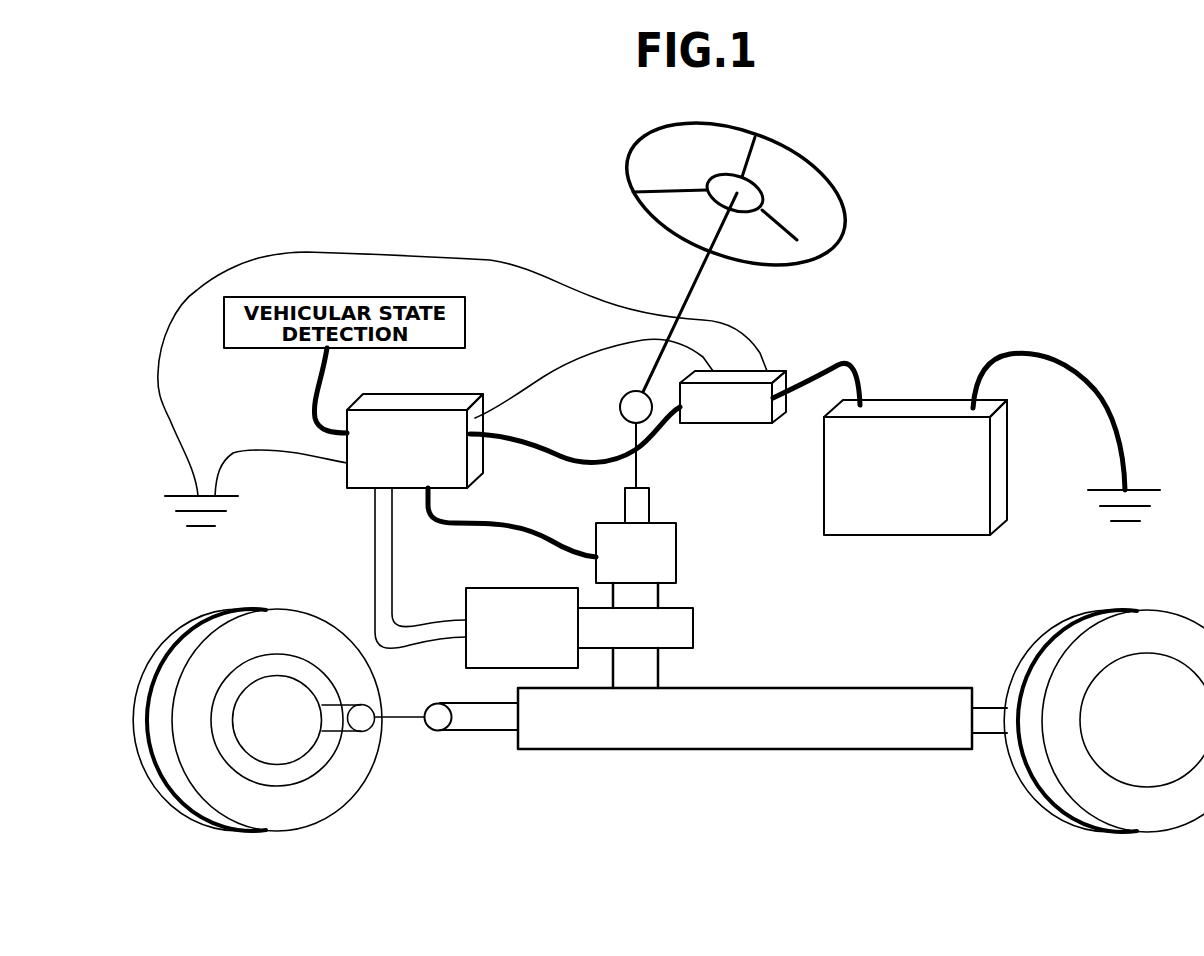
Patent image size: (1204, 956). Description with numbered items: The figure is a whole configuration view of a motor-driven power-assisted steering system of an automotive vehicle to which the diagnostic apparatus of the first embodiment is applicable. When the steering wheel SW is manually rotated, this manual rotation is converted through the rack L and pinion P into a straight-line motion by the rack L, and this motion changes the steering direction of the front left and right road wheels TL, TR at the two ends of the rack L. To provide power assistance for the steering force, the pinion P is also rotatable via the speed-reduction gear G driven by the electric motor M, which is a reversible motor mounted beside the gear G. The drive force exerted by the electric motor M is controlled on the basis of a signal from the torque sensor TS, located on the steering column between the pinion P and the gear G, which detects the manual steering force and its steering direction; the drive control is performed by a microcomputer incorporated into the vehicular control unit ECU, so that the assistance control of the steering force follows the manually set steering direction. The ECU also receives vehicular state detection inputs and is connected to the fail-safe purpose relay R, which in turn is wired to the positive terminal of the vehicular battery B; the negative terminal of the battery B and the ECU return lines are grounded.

The steering wheel SW is at (845, 208).
The pinion P is at (628, 506).
The torque sensor TS is at (636, 553).
The speed-reduction gear G is at (745, 628).
The electric motor M is at (506, 604).
The rack L is at (505, 720).
The vehicular control unit ECU is at (415, 441).
The fail-safe purpose relay R is at (730, 423).
The vehicular battery B is at (927, 410).
The front right road wheel TR is at (268, 609).
The front left road wheel TL is at (1122, 610).